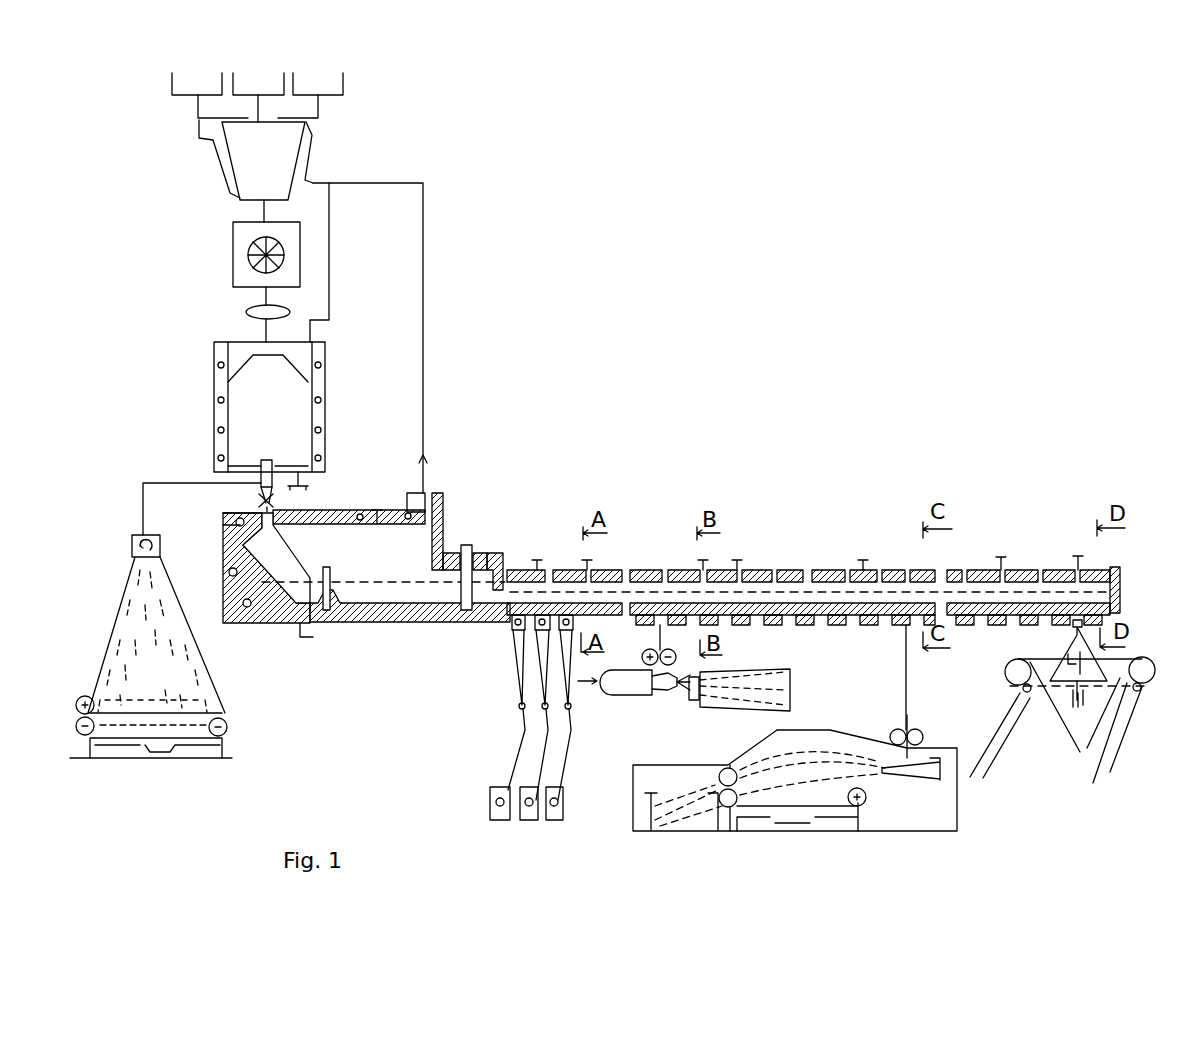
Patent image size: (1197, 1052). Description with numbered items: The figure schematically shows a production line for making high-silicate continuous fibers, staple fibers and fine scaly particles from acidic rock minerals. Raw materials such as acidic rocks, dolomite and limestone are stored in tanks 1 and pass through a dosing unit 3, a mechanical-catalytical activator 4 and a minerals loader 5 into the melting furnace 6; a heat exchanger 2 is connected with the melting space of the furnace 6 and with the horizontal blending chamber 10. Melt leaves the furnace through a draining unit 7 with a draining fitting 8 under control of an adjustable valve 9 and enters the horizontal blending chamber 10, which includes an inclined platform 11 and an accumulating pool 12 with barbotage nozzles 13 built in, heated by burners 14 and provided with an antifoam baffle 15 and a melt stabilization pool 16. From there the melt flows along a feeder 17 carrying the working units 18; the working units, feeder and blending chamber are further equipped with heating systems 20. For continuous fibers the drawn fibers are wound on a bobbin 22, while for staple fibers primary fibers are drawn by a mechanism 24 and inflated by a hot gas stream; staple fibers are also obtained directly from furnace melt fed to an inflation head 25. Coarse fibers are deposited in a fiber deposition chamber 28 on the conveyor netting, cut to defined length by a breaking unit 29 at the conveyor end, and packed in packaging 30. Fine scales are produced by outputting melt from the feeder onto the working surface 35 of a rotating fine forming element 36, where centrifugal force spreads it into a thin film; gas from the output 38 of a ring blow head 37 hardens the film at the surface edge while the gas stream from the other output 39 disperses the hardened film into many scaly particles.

The tanks 1 is at (257, 97).
The heat exchanger 2 is at (307, 138).
The dosing unit 3 is at (240, 153).
The mechanical-catalytical activator 4 is at (240, 250).
The minerals loader 5 is at (250, 313).
The melting furnace 6 is at (240, 410).
The draining unit 7 is at (257, 480).
The draining fitting 8 is at (330, 457).
The adjustable valve 9 is at (258, 498).
The horizontal blending chamber 10 is at (245, 542).
The inclined platform 11 is at (247, 570).
The accumulating pool 12 is at (248, 585).
The barbotage nozzles 13 is at (298, 637).
The burners 14 is at (307, 510).
The antifoam baffle 15 is at (330, 612).
The melt stabilization pool 16 is at (437, 593).
The feeder 17 is at (502, 615).
The working units 18 is at (663, 618).
The heating systems 20 is at (533, 570).
The bobbin 22 is at (497, 787).
The mechanism for drawing primary fibers 24 is at (652, 695).
The inflation head 25 is at (130, 545).
The fiber deposition chamber 28 is at (837, 740).
The breaking unit 29 is at (730, 768).
The packaging 30 is at (693, 817).
The working surface 35 is at (1023, 690).
The rotating fine forming element 36 is at (1060, 668).
The ring blow head 37 is at (1005, 678).
The output 38 is at (1120, 735).
The output 39 is at (1003, 783).